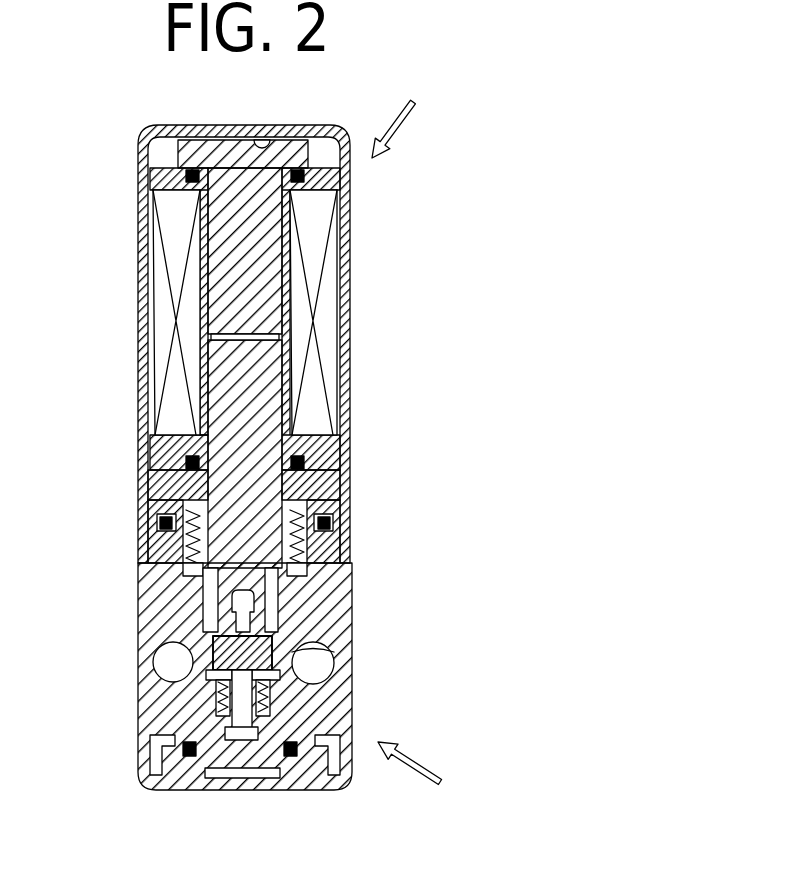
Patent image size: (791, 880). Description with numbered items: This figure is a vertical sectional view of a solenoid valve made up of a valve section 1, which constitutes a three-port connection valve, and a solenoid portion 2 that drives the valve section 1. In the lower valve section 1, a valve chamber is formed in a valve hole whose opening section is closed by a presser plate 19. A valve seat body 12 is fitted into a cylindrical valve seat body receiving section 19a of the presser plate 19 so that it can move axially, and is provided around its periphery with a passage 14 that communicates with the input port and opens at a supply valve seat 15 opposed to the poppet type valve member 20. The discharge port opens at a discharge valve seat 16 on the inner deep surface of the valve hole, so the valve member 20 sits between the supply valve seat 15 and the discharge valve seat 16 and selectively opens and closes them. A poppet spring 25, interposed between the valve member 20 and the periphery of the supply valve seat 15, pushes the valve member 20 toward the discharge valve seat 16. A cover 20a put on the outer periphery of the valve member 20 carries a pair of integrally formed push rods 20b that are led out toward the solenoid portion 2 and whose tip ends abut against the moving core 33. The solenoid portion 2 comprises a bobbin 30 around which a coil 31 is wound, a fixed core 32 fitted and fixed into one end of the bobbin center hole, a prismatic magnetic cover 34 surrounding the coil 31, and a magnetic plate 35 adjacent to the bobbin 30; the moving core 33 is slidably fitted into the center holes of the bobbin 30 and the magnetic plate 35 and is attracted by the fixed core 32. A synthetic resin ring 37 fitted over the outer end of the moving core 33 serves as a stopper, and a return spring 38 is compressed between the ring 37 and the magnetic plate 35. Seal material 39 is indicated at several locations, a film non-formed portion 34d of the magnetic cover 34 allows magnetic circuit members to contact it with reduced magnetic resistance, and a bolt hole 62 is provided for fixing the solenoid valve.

The valve section 1 is at (420, 776).
The solenoid portion 2 is at (400, 117).
The valve seat body 12 is at (182, 746).
The passage 14 is at (243, 741).
The supply valve seat 15 is at (295, 676).
The discharge valve seat 16 is at (225, 637).
The presser plate 19 is at (298, 766).
The valve seat body receiving section 19a is at (206, 768).
The valve member 20 is at (205, 657).
The cover 20a is at (330, 651).
The push rods 20b is at (285, 600).
The poppet spring 25 is at (215, 706).
The bobbin 30 is at (286, 243).
The coil 31 is at (318, 318).
The fixed core 32 is at (232, 245).
The moving core 33 is at (232, 372).
The magnetic cover 34 is at (249, 126).
The film non-formed portion 34d is at (272, 138).
The magnetic plate 35 is at (330, 492).
The ring 37 is at (176, 575).
The return spring 38 is at (152, 535).
The seal material 39 is at (188, 172).
The bolt hole 62 is at (158, 677).